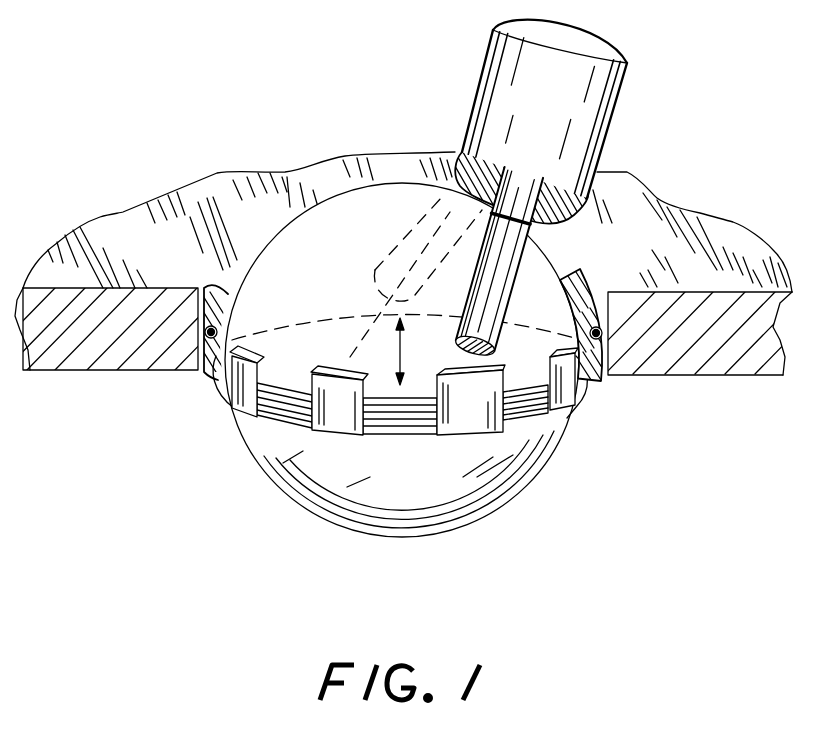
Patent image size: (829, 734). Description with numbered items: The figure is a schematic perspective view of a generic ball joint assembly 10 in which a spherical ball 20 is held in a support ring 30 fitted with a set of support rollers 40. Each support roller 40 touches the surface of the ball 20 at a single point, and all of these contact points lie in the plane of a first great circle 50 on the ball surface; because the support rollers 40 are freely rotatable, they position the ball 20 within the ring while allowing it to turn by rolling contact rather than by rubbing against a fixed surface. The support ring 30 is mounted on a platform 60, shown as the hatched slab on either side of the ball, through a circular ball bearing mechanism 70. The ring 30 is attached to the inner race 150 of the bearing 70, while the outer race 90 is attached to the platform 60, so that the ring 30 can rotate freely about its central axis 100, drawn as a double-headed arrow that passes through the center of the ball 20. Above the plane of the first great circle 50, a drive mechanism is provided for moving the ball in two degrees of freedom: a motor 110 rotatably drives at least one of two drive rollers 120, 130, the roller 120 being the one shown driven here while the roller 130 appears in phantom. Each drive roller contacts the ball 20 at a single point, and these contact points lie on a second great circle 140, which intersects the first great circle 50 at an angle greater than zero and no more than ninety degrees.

The ball joint assembly 10 is at (214, 158).
The spherical ball 20 is at (498, 512).
The support ring 30 is at (324, 438).
The support rollers 40 is at (276, 416).
The first great circle 50 is at (268, 333).
The platform 60 is at (128, 372).
The circular ball bearing mechanism 70 is at (212, 286).
The outer race 90 is at (597, 290).
The central axis 100 is at (398, 348).
The motor 110 is at (622, 82).
The drive roller 120 is at (520, 266).
The drive roller 130 is at (427, 213).
The second great circle 140 is at (312, 468).
The inner race 150 is at (232, 300).